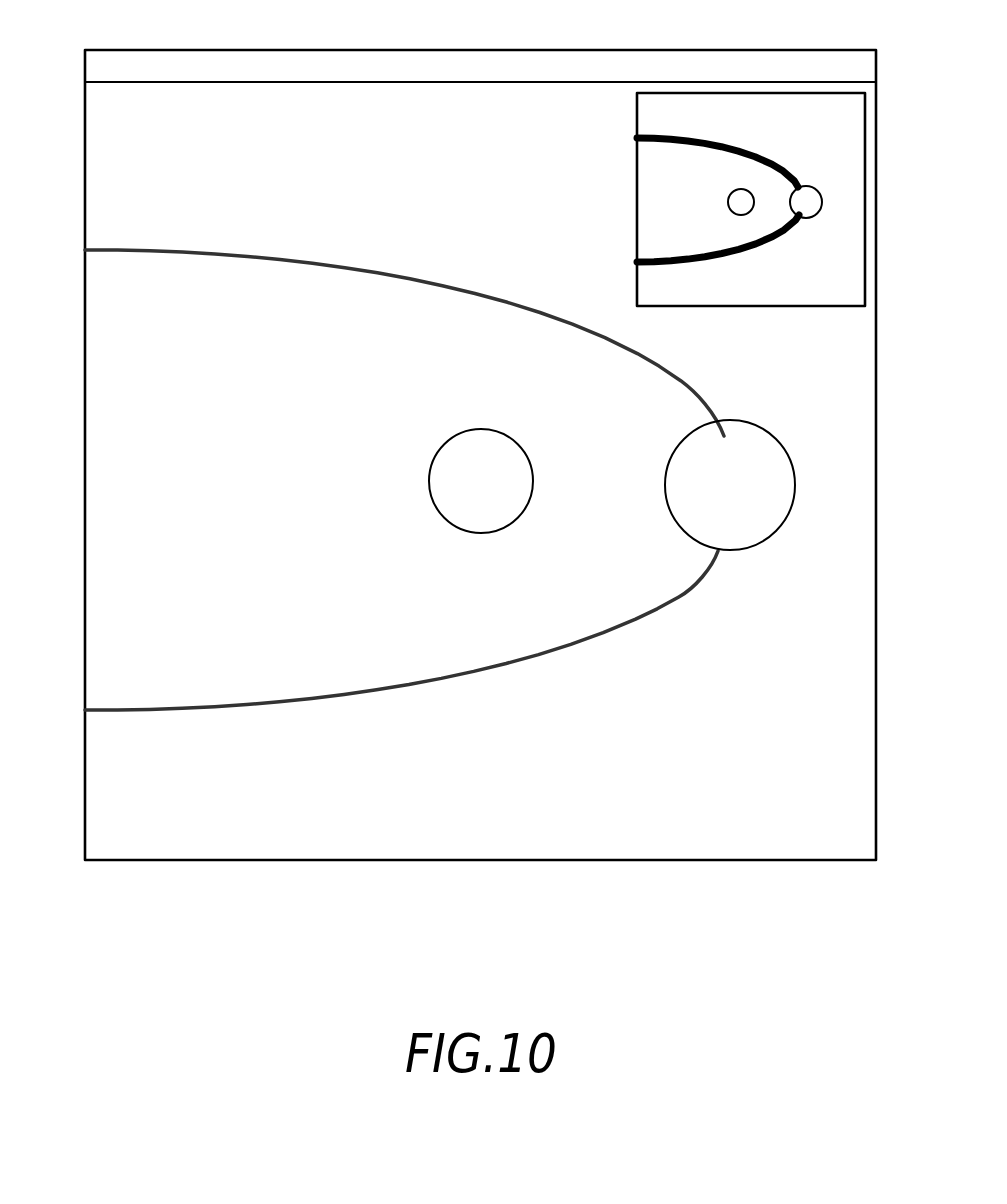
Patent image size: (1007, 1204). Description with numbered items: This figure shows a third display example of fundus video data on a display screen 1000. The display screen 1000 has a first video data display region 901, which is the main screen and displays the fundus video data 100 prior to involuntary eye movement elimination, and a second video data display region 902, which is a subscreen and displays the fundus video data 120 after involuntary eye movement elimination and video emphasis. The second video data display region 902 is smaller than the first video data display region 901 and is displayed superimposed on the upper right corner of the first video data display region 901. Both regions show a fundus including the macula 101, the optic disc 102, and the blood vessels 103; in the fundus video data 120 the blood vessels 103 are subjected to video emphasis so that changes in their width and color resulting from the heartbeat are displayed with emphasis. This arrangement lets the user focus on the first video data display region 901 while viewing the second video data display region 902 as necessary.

The fundus video data 100 is at (230, 118).
The display screen 1000 is at (476, 50).
The fundus video data 120 is at (793, 108).
The first video data display region 901 is at (97, 200).
The second video data display region 902 is at (850, 156).
The macula 101 is at (429, 482).
The optic disc 102 is at (753, 539).
The blood vessels 103 is at (527, 304).